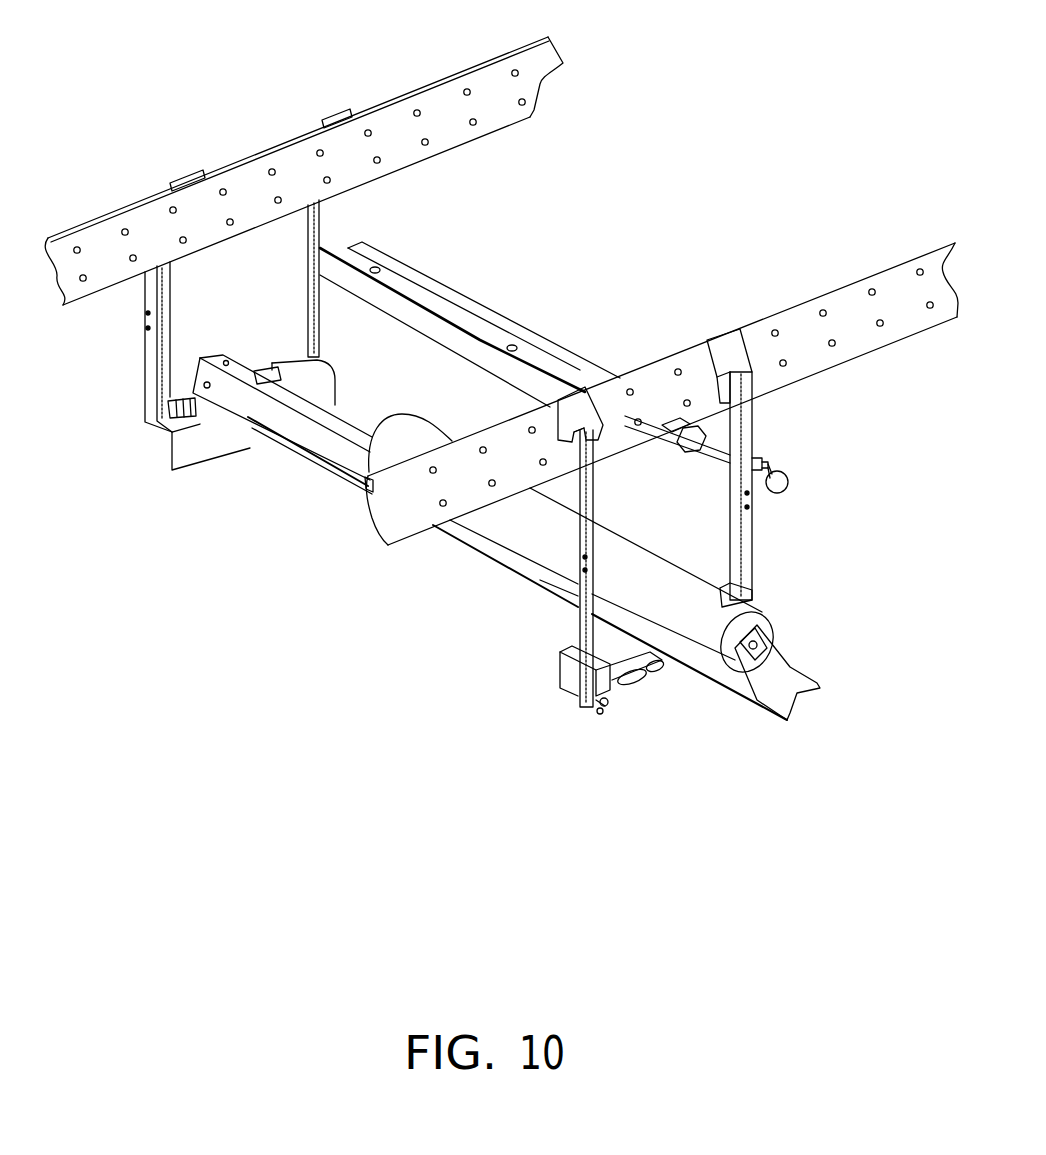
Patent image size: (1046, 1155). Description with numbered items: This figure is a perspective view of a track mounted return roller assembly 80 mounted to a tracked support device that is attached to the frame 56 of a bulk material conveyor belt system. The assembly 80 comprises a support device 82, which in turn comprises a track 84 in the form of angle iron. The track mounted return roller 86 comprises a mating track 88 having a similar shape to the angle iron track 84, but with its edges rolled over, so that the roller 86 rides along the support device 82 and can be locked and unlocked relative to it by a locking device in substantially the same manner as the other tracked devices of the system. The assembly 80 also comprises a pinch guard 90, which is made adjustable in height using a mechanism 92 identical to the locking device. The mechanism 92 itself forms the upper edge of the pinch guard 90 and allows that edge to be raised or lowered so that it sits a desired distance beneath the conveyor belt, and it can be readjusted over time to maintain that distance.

The frame 56 is at (397, 120).
The track mounted return roller assembly 80 is at (208, 432).
The support device 82 is at (573, 628).
The track 84 is at (317, 442).
The track mounted return roller 86 is at (730, 653).
The mating track 88 is at (773, 693).
The pinch guard 90 is at (333, 262).
The mechanism 92 is at (510, 346).